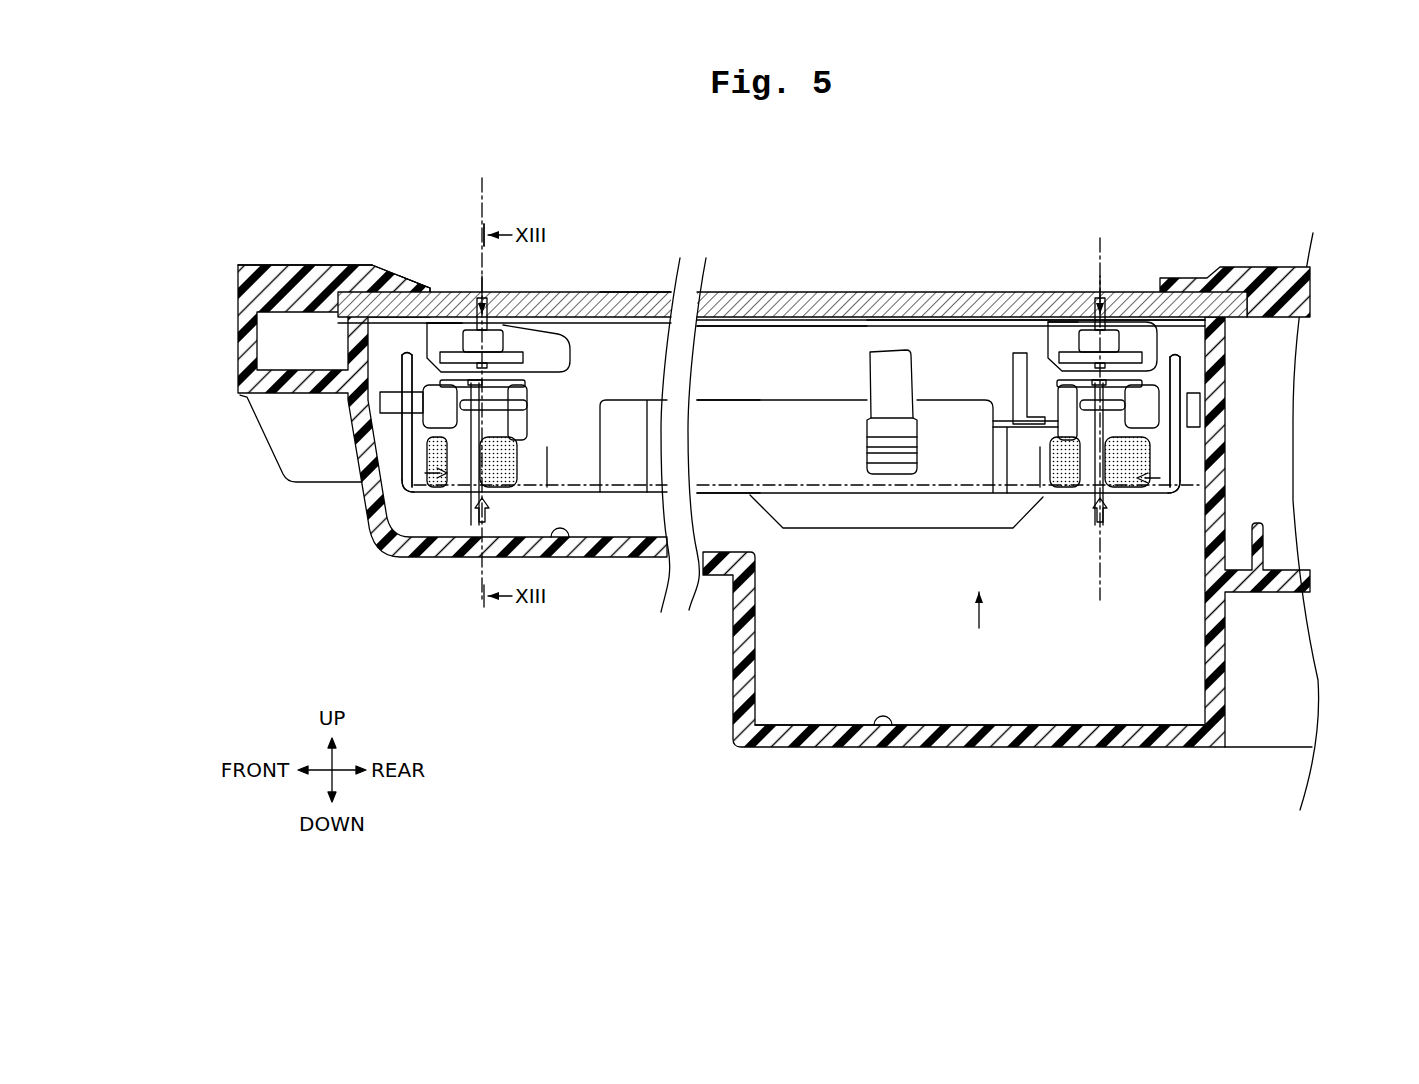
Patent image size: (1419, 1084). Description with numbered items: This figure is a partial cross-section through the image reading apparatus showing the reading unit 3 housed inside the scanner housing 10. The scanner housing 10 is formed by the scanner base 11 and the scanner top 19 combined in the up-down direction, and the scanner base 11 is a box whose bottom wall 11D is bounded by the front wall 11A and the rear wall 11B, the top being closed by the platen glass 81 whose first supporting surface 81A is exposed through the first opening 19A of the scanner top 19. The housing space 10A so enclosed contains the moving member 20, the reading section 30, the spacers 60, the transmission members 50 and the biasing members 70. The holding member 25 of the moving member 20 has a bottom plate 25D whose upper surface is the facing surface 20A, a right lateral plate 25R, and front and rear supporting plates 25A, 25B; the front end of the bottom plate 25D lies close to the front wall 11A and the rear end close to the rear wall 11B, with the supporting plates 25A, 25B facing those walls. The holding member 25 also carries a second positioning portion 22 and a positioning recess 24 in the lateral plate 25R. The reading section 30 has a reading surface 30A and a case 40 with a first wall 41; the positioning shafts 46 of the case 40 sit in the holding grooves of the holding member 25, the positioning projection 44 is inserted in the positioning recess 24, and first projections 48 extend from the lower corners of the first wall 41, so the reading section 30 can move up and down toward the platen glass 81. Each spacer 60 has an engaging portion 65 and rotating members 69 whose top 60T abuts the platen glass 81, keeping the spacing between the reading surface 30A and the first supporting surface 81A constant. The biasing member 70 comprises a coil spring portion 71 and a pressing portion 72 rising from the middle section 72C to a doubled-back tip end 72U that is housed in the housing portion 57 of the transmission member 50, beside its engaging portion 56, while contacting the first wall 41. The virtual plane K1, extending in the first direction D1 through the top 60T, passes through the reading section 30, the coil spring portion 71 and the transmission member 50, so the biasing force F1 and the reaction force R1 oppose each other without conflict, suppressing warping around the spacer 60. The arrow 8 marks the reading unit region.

The reading unit 3 is at (947, 682).
The latch device 8 is at (537, 673).
The scanner housing 10 is at (232, 188).
The housing space 10A is at (826, 692).
The scanner base 11 is at (234, 347).
The front wall 11A is at (350, 330).
The rear wall 11B is at (1250, 267).
The bottom wall 11D is at (558, 540).
The scanner top 19 is at (298, 262).
The first opening 19A is at (433, 288).
The moving member 20 is at (878, 545).
The facing surface 20A is at (740, 497).
The second positioning portion 22 is at (473, 443).
The positioning recess 24 is at (880, 448).
The holding member 25 is at (840, 532).
The supporting plate 25A is at (400, 432).
The supporting plate 25B is at (1185, 450).
The bottom plate 25D is at (735, 500).
The lateral plate 25R is at (710, 430).
The reading section 30 is at (767, 318).
The reading surface 30A is at (720, 293).
The case 40 is at (877, 327).
The first wall 41 is at (820, 345).
The positioning projection 44 is at (890, 420).
The positioning shaft 46 is at (395, 403).
The first projection 48 is at (547, 447).
The transmission member 50 is at (533, 403).
The engaging portion 56 is at (525, 428).
The housing portion 57 is at (505, 378).
The spacer 60 is at (420, 337).
The top 60T is at (458, 318).
The engaging portion 65 is at (1022, 415).
The rotating member 69 is at (492, 325).
The biasing member 70 is at (352, 627).
The coil spring portion 71 is at (407, 515).
The pressing portion 72 is at (458, 507).
The middle section 72C is at (458, 540).
The tip end 72U is at (405, 357).
The platen glass 81 is at (600, 288).
The first supporting surface 81A is at (640, 291).
The virtual plane K1 is at (787, 376).
The reaction force R1 is at (807, 287).
The biasing force F1 is at (804, 519).
The first direction D1 is at (999, 610).